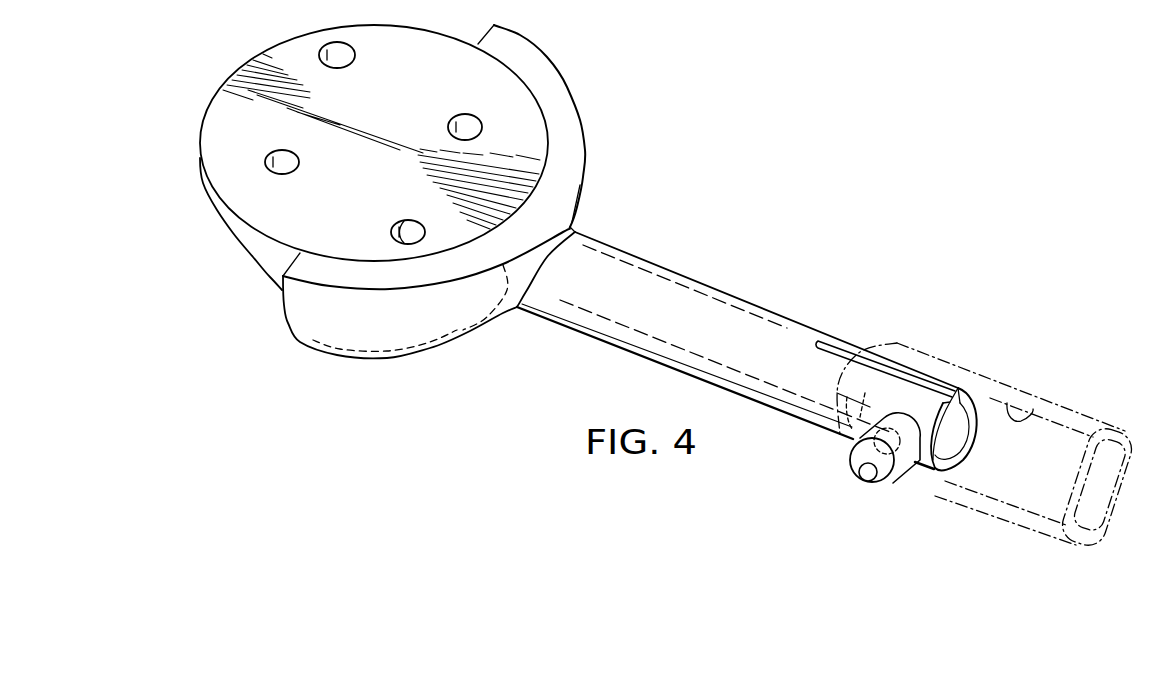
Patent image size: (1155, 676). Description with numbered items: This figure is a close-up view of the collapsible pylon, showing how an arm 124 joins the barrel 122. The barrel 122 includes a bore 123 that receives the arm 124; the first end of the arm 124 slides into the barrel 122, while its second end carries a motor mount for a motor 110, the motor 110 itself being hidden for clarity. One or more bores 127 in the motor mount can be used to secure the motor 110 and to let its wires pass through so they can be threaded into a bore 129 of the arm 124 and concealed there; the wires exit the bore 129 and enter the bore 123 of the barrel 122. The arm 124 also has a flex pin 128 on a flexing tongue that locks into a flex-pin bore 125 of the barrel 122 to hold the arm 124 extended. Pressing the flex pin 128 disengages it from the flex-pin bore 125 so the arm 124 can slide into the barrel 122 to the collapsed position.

The motor 110 is at (528, 64).
The barrel 122 is at (950, 358).
The bore 123 is at (1015, 400).
The arm 124 is at (718, 285).
The flex-pin bore 125 is at (887, 433).
The bore 127 is at (398, 223).
The flex pin 128 is at (868, 477).
The bore 129 is at (957, 445).